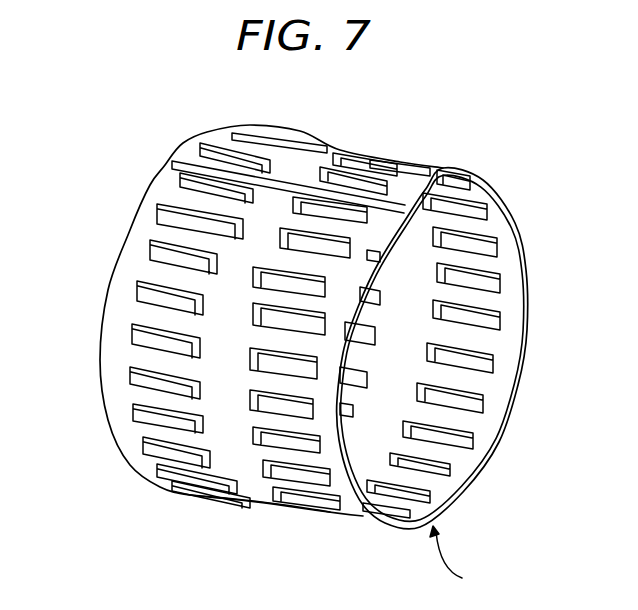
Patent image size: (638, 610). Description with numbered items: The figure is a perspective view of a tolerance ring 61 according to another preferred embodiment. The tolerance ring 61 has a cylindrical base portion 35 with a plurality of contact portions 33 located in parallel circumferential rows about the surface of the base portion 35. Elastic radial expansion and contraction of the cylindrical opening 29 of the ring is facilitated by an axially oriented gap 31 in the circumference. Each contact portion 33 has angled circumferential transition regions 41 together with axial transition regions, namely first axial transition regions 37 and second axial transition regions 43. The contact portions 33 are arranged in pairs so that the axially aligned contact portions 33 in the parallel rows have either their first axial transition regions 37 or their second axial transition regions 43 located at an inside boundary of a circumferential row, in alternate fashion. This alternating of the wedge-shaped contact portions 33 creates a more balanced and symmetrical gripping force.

The cylindrical opening 29 is at (405, 367).
The axially oriented gap 31 is at (172, 162).
The contact portions 33 is at (240, 153).
The cylindrical base portion 35 is at (257, 487).
The first axial transition regions 37 is at (190, 178).
The angled circumferential transition regions 41 is at (270, 398).
The second axial transition regions 43 is at (287, 146).
The tolerance ring 61 is at (463, 558).